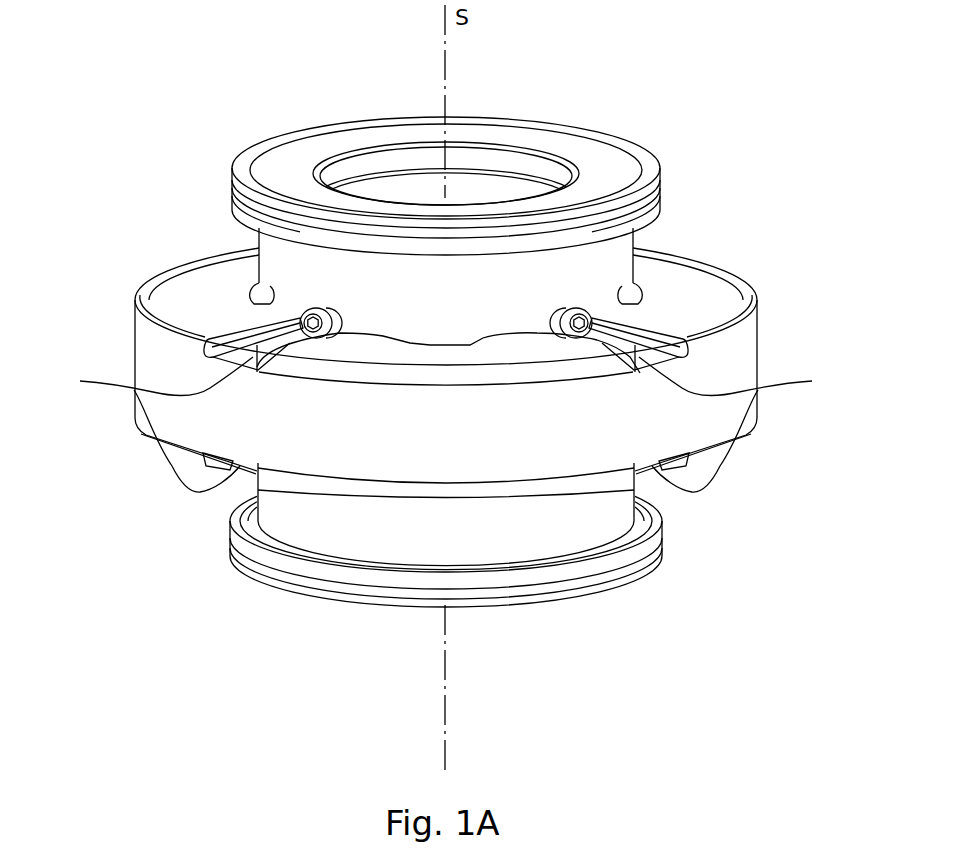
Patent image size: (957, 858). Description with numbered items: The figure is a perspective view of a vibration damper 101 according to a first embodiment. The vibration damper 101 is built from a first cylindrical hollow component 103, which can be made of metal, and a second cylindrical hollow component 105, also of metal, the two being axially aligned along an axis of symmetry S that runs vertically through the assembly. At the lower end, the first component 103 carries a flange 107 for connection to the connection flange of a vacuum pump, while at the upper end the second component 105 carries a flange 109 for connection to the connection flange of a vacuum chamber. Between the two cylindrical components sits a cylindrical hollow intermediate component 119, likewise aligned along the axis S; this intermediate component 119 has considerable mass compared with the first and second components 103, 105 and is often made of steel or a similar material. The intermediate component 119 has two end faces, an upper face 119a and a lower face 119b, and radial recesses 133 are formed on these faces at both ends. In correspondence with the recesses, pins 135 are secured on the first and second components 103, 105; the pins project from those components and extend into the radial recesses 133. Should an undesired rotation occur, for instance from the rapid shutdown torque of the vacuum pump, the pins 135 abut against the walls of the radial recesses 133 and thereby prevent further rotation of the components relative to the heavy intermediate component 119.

The vibration damper 101 is at (711, 147).
The first cylindrical hollow component 103 is at (636, 498).
The second cylindrical hollow component 105 is at (640, 242).
The flange 107 is at (660, 543).
The flange 109 is at (660, 187).
The cylindrical hollow intermediate component 119 is at (135, 320).
The face 119a is at (373, 356).
The face 119b is at (318, 496).
The radial recesses 133 is at (238, 348).
The pins 135 is at (235, 243).